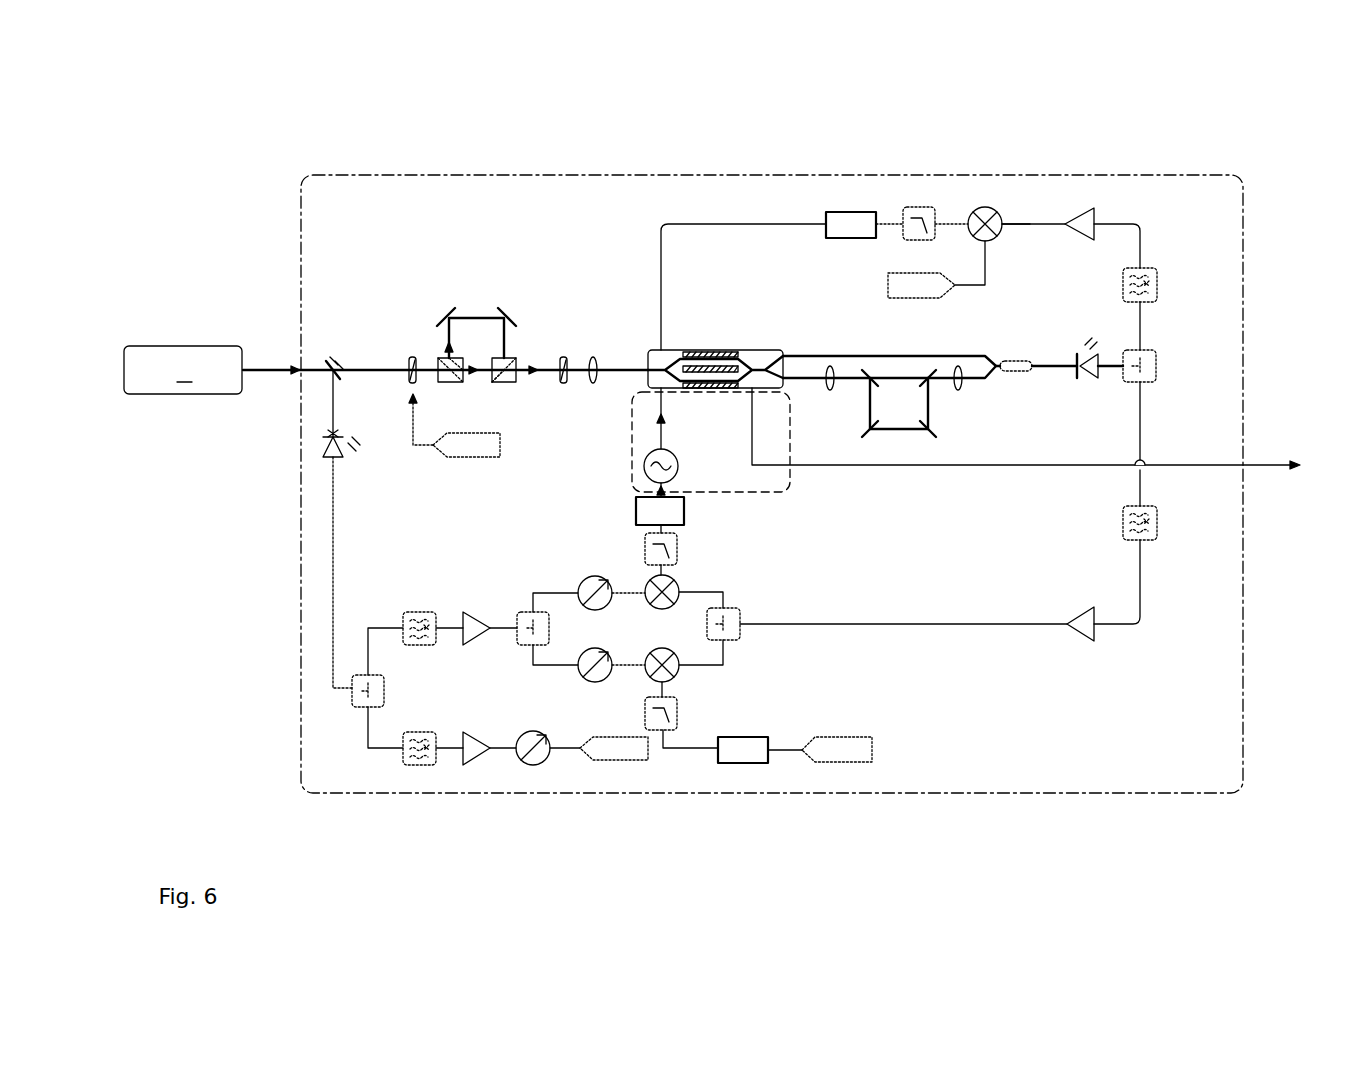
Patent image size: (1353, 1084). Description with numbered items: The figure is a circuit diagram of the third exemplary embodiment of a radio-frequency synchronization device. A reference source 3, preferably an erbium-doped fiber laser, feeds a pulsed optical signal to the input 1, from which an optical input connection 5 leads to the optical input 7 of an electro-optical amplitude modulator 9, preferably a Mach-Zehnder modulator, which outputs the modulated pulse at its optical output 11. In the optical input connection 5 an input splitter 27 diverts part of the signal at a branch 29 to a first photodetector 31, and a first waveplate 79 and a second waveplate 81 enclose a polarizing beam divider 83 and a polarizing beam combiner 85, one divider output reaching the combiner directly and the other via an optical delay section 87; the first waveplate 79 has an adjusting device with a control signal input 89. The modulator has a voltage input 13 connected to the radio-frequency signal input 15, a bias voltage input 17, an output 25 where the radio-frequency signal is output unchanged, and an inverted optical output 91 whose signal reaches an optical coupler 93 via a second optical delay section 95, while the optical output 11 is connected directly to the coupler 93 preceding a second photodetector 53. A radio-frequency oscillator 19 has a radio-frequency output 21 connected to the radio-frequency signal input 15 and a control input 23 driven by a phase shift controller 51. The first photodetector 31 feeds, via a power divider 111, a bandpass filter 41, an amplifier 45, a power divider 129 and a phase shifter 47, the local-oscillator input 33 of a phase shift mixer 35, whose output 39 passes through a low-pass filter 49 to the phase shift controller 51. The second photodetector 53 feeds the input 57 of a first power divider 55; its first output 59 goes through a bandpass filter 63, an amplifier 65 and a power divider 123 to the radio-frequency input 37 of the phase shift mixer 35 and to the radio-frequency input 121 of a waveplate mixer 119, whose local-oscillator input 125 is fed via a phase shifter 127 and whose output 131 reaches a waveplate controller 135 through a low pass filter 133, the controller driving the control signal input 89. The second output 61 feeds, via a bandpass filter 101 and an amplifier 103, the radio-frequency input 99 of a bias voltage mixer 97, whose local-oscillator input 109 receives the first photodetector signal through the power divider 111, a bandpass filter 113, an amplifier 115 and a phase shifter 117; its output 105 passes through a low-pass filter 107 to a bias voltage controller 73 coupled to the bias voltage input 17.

The input 1 is at (297, 358).
The reference source 3 is at (183, 370).
The optical input connection 5 is at (482, 387).
The optical input 7 is at (700, 320).
The electro-optical amplitude modulator 9 is at (736, 350).
The optical output 11 is at (786, 350).
The voltage input 13 is at (645, 390).
The radio-frequency signal input 15 is at (658, 419).
The bias voltage input 17 is at (662, 345).
The radio-frequency oscillator 19 is at (642, 467).
The radio-frequency output 21 is at (667, 458).
The control input 23 is at (672, 483).
The output 25 is at (754, 395).
The input splitter 27 is at (333, 335).
The branch 29 is at (318, 395).
The first photodetector 31 is at (315, 452).
The local-oscillator input 33 is at (650, 580).
The phase shift mixer 35 is at (657, 603).
The radio-frequency input 37 is at (690, 593).
The output 39 is at (666, 576).
The bandpass filter 41 is at (420, 612).
The amplifier 45 is at (475, 612).
The phase shifter 47 is at (585, 576).
The low-pass filter 49 is at (680, 545).
The phase shift controller 51 is at (684, 511).
The second photodetector 53 is at (1075, 355).
The first power divider 55 is at (1158, 366).
The input 57 is at (1128, 380).
The first output 59 is at (1140, 384).
The second output 61 is at (1140, 346).
The bandpass filter 63 is at (1160, 524).
The amplifier 65 is at (1086, 620).
The bias voltage controller 73 is at (850, 212).
The first waveplate 79 is at (413, 348).
The second waveplate 81 is at (563, 348).
The polarizing beam divider 83 is at (459, 383).
The polarizing beam combiner 85 is at (505, 352).
The optical delay section 87 is at (475, 313).
The control signal input 89 is at (412, 400).
The inverted optical output 91 is at (790, 389).
The optical coupler 93 is at (1020, 372).
The second optical delay section 95 is at (903, 435).
The bias voltage mixer 97 is at (985, 206).
The radio-frequency input 99 is at (1000, 215).
The bandpass filter 101 is at (1150, 276).
The amplifier 103 is at (1090, 207).
The output 105 is at (972, 217).
The low-pass filter 107 is at (912, 206).
The local-oscillator input 109 is at (992, 240).
The power divider 111 is at (347, 702).
The bandpass filter 113 is at (420, 767).
The amplifier 115 is at (475, 767).
The phase shifter 117 is at (533, 767).
The waveplate mixer 119 is at (668, 677).
The radio-frequency input 121 is at (686, 666).
The power divider 123 is at (742, 637).
The local-oscillator input 125 is at (645, 668).
The phase shifter 127 is at (580, 677).
The power divider 129 is at (517, 642).
The output 131 is at (677, 716).
The low pass filter 133 is at (655, 733).
The waveplate controller 135 is at (743, 763).